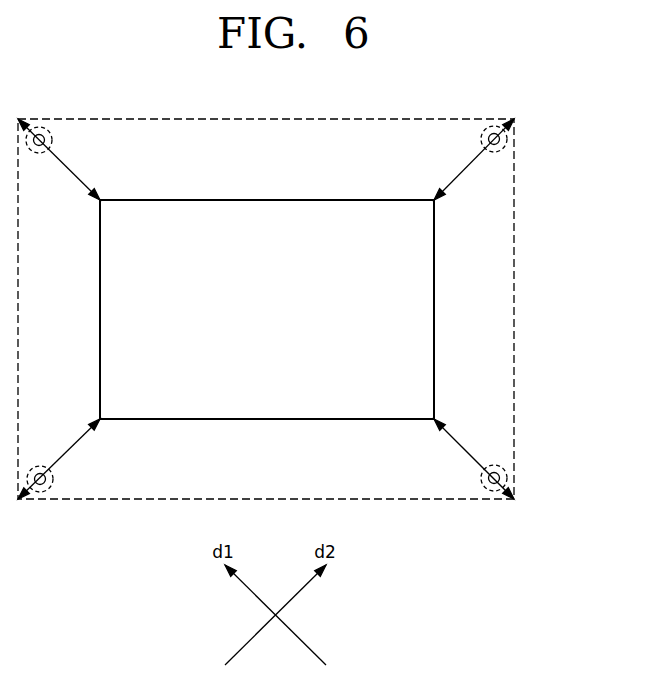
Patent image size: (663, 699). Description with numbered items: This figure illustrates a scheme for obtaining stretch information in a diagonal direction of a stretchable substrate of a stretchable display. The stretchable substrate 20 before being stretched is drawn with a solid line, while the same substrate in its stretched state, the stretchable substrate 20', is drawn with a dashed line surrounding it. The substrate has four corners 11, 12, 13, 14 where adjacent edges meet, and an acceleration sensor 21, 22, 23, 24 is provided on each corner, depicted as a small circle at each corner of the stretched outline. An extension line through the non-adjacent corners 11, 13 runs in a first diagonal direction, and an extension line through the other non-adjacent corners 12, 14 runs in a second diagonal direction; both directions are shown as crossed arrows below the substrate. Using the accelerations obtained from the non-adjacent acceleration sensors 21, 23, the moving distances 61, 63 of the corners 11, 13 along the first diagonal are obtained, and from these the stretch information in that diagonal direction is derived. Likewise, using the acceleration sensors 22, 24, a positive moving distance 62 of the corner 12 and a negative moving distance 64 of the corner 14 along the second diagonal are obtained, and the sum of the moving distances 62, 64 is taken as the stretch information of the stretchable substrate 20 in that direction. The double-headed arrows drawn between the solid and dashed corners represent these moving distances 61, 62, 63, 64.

The stretchable substrate 20 is at (336, 309).
The stretchable substrate in a stretched state 20' is at (307, 309).
The corner 11 is at (41, 134).
The corner 12 is at (492, 134).
The corner 13 is at (492, 485).
The corner 14 is at (42, 485).
The acceleration sensor 21 is at (38, 134).
The acceleration sensor 22 is at (495, 134).
The acceleration sensor 23 is at (496, 485).
The acceleration sensor 24 is at (39, 485).
The moving distance 61 is at (59, 159).
The moving distance 62 is at (474, 159).
The moving distance 63 is at (474, 459).
The moving distance 64 is at (59, 459).